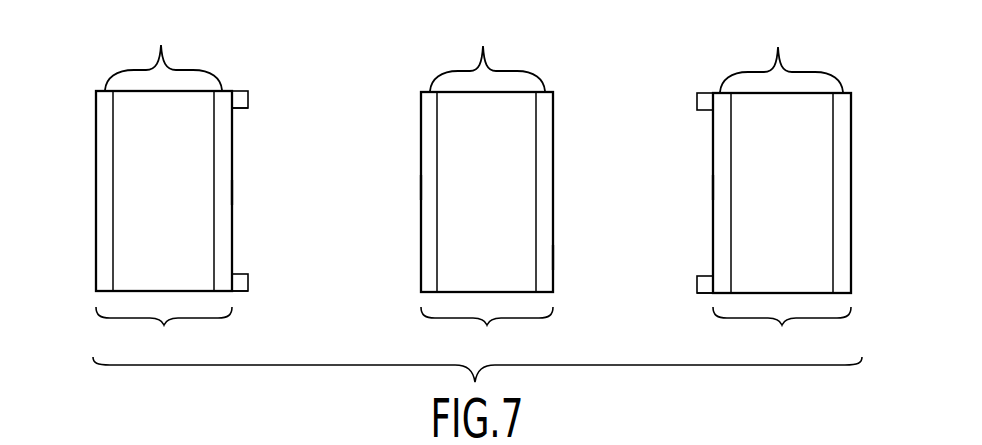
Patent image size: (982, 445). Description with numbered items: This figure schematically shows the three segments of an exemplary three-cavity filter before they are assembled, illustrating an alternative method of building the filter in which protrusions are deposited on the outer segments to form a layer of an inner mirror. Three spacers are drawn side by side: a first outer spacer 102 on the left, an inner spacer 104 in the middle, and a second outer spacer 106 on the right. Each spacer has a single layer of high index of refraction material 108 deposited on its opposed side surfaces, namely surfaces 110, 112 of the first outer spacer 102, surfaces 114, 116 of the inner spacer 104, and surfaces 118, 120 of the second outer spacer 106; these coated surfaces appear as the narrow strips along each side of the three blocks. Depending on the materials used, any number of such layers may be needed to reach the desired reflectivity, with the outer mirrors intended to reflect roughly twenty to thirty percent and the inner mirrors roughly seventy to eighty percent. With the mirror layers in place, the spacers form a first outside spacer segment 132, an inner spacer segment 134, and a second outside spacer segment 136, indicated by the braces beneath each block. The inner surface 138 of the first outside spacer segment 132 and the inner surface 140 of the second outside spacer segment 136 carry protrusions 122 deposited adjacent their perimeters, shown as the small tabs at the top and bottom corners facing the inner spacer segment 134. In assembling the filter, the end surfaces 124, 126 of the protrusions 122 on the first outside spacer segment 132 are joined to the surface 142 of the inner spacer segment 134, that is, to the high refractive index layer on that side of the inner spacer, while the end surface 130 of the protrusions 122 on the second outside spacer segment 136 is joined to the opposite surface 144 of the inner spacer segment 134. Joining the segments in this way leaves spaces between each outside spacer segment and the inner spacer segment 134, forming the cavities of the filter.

The first outer spacer 102 is at (182, 184).
The inner spacer 104 is at (467, 186).
The second outer spacer 106 is at (762, 186).
The layer of high index of refraction material 108 is at (474, 52).
The spacer side surface 110 is at (113, 160).
The spacer side surface 112 is at (215, 158).
The spacer side surface 114 is at (437, 152).
The spacer side surface 116 is at (537, 158).
The spacer side surface 118 is at (730, 152).
The spacer side surface 120 is at (835, 157).
The protrusions 122 is at (237, 91).
The end surface 124 is at (248, 101).
The end surface 126 is at (248, 285).
The end surface 130 is at (695, 283).
The first outside spacer segment 132 is at (164, 332).
The inner spacer segment 134 is at (487, 332).
The second outside spacer segment 136 is at (782, 333).
The inner surface 138 is at (233, 193).
The inner surface 140 is at (713, 188).
The surface of the inner spacer segment 142 is at (421, 187).
The surface of the inner spacer segment 144 is at (553, 258).